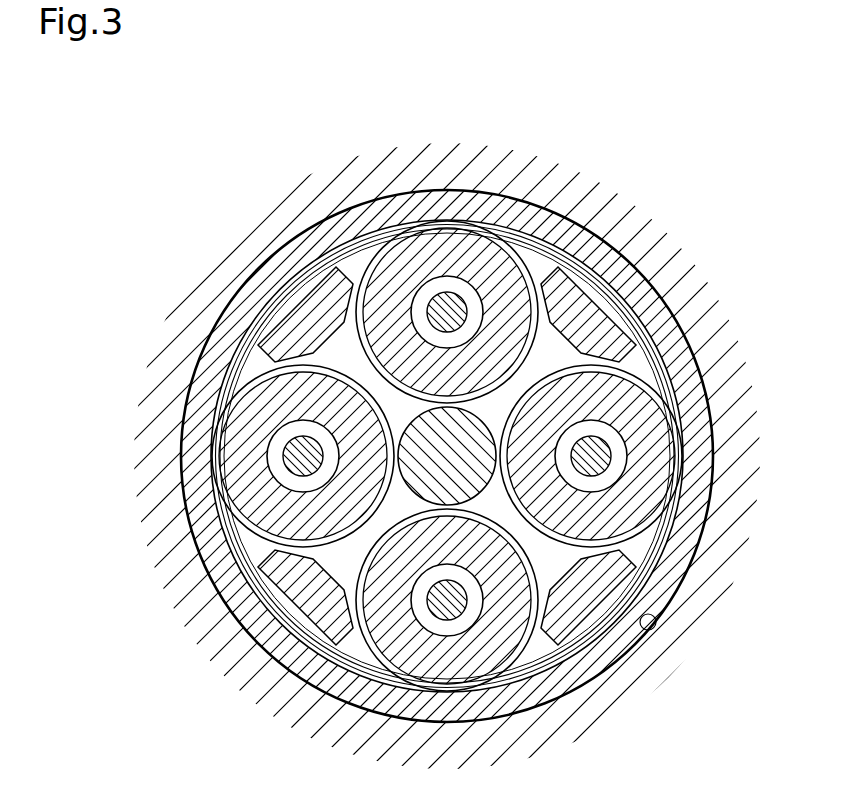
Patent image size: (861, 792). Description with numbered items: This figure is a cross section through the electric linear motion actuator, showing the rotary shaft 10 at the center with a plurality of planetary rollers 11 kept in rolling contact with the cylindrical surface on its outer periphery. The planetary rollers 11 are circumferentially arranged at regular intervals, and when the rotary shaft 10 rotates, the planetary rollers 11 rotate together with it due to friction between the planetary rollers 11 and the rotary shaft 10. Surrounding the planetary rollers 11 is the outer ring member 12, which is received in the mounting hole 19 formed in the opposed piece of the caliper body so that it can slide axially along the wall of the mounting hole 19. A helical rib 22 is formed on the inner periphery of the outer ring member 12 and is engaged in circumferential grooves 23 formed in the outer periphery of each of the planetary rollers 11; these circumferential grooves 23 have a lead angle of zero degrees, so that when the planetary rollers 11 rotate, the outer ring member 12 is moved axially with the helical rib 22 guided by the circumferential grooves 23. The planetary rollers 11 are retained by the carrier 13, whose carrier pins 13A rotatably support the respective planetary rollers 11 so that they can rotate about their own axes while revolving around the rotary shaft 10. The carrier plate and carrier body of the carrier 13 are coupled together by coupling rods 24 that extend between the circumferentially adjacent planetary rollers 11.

The rotary shaft 10 is at (420, 457).
The planetary rollers 11 is at (430, 396).
The outer ring member 12 is at (263, 277).
The carrier 13 is at (558, 255).
The carrier pins 13A is at (450, 303).
The mounting hole 19 is at (658, 618).
The helical rib 22 is at (238, 558).
The circumferential grooves 23 is at (385, 240).
The coupling rods 24 is at (303, 612).